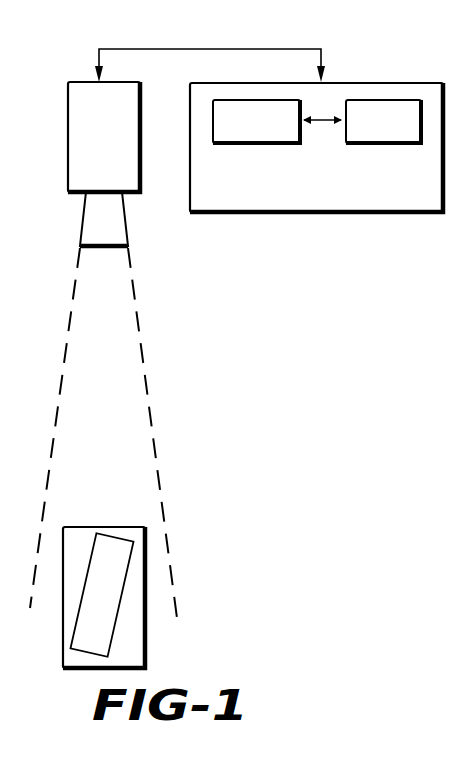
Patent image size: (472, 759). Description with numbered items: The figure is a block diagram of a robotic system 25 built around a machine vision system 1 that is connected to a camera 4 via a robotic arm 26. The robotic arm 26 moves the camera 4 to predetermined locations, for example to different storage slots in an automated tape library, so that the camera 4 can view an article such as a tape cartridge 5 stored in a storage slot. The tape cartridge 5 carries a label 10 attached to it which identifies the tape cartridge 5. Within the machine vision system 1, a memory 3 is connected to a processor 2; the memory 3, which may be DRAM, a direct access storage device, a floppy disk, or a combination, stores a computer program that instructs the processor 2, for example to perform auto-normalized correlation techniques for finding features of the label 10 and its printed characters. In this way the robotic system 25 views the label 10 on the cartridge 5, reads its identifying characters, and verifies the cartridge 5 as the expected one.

The machine vision system 1 is at (398, 68).
The processor 2 is at (226, 144).
The memory 3 is at (412, 144).
The camera 4 is at (68, 131).
The tape cartridge 5 is at (63, 607).
The label 10 is at (110, 643).
The robotic system 25 is at (180, 143).
The robotic arm 26 is at (158, 29).